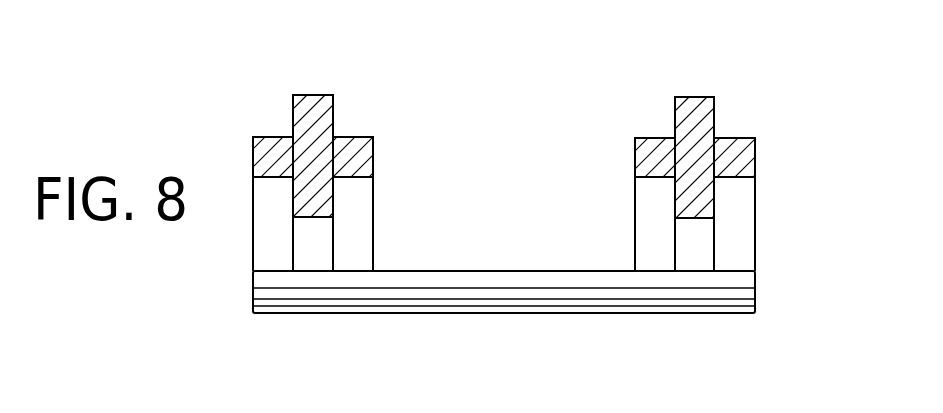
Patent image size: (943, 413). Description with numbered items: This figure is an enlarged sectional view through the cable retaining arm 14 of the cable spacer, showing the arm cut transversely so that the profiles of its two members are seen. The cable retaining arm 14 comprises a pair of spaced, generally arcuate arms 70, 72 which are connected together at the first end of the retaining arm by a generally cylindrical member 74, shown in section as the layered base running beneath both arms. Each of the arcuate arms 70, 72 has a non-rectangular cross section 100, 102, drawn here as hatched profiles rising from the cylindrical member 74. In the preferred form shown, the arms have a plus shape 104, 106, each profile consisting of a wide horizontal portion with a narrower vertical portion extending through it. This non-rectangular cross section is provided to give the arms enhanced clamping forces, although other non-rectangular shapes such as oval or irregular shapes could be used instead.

The cable retaining arm 14 is at (243, 315).
The arcuate arm 70 is at (343, 232).
The arcuate arm 72 is at (663, 233).
The cylindrical member 74 is at (508, 298).
The non-rectangular cross section 100 is at (312, 105).
The non-rectangular cross section 102 is at (695, 102).
The plus shape 104 is at (258, 131).
The plus shape 106 is at (747, 132).